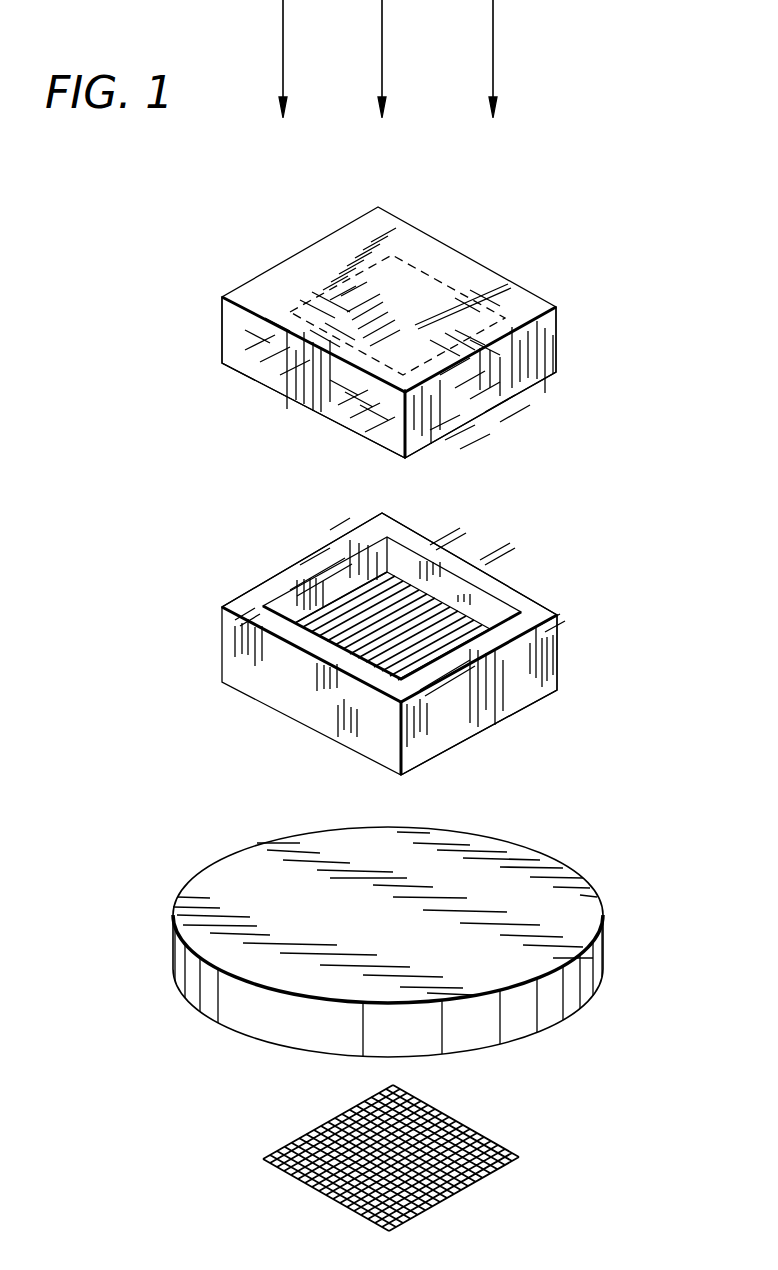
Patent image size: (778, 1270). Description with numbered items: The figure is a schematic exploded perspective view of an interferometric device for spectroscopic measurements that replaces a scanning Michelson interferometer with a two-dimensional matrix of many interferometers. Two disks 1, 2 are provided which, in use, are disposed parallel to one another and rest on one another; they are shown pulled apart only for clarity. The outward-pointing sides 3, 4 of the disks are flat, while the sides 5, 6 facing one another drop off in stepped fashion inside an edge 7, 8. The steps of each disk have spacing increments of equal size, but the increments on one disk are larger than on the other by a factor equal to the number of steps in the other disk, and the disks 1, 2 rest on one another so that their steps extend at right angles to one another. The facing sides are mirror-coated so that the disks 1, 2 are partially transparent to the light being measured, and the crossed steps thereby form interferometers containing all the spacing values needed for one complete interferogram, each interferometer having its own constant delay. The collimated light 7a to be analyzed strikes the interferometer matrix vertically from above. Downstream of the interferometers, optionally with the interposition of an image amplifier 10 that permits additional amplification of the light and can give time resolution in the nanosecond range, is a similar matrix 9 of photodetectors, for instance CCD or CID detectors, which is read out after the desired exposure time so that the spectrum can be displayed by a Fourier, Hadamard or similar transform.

The disk 1 is at (397, 326).
The disk 2 is at (428, 643).
The outward-pointing side 3 is at (475, 275).
The outward-pointing side 4 is at (518, 710).
The side toward the other disk 5 is at (535, 388).
The side toward the other disk 6 is at (522, 607).
The edge 7 is at (243, 363).
The light to be analyzed 7a is at (383, 50).
The edge 8 is at (260, 594).
The matrix of photodetectors 9 is at (513, 1180).
The image amplifier 10 is at (582, 1033).